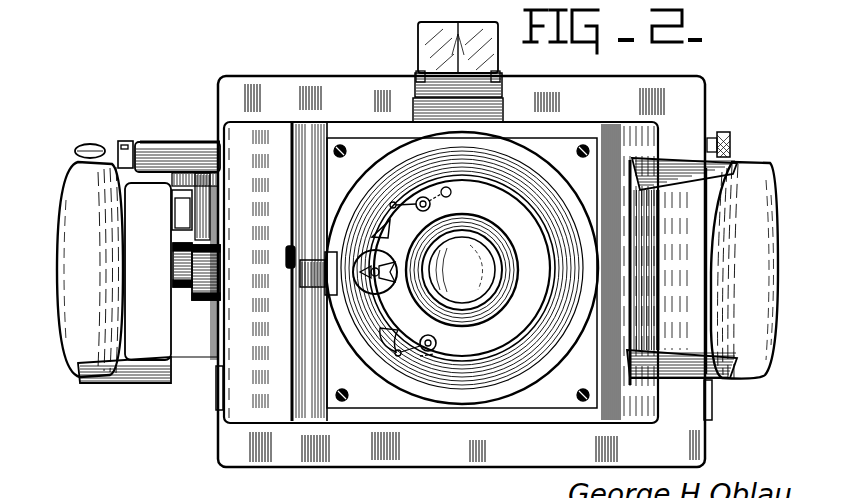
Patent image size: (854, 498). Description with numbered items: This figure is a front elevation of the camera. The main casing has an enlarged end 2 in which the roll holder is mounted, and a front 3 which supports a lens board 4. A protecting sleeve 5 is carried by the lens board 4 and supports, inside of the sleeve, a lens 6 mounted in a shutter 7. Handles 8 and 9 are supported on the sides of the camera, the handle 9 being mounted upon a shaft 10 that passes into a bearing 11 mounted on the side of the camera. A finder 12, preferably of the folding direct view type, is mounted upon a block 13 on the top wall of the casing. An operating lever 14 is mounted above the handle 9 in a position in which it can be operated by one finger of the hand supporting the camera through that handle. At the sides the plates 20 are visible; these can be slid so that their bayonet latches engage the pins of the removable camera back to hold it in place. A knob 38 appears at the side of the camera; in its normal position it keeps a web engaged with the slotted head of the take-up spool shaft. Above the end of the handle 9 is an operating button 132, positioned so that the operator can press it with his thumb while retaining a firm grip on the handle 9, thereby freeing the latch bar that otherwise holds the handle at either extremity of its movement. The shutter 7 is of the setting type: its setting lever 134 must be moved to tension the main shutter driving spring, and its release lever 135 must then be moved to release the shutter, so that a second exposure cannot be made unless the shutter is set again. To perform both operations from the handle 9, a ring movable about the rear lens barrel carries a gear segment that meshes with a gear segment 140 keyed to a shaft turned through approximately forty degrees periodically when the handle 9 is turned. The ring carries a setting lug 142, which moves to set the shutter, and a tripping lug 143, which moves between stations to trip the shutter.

The enlarged end 2 is at (463, 459).
The front 3 is at (524, 133).
The lens board 4 is at (559, 158).
The protecting sleeve 5 is at (397, 197).
The lens 6 is at (462, 270).
The shutter 7 is at (462, 268).
The handle 8 is at (702, 271).
The handle 9 is at (138, 262).
The shaft 10 is at (182, 267).
The bearing 11 is at (174, 290).
The finder 12 is at (445, 36).
The block 13 is at (490, 117).
The operating lever 14 is at (133, 147).
The plates 20 is at (219, 396).
The knob 38 is at (729, 148).
The operating button 132 is at (98, 132).
The setting lever 134 is at (388, 177).
The lever 135 is at (447, 348).
The gear segment 140 is at (352, 290).
The setting lug 142 is at (411, 212).
The tripping lug 143 is at (407, 324).